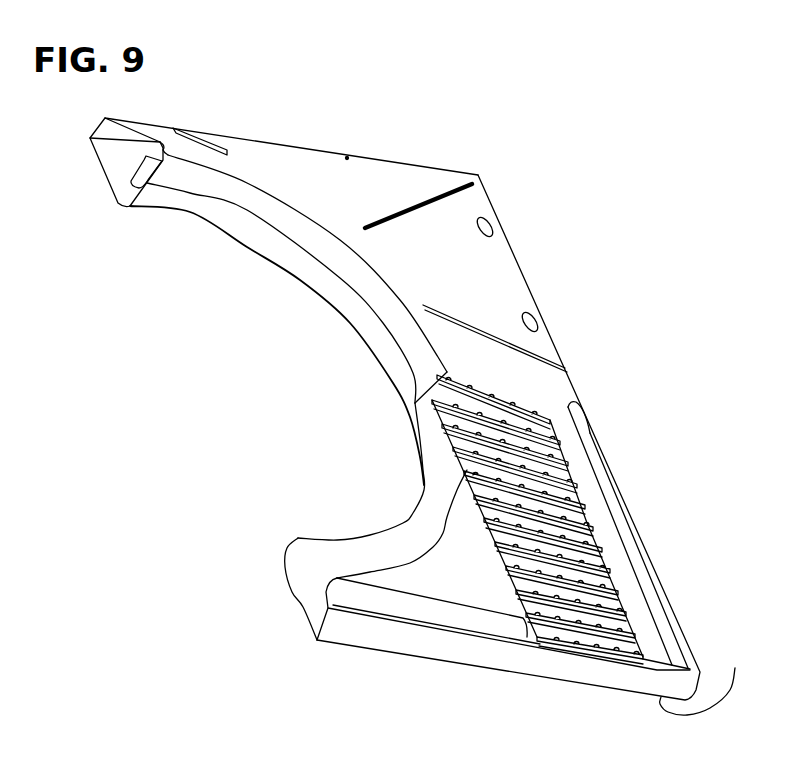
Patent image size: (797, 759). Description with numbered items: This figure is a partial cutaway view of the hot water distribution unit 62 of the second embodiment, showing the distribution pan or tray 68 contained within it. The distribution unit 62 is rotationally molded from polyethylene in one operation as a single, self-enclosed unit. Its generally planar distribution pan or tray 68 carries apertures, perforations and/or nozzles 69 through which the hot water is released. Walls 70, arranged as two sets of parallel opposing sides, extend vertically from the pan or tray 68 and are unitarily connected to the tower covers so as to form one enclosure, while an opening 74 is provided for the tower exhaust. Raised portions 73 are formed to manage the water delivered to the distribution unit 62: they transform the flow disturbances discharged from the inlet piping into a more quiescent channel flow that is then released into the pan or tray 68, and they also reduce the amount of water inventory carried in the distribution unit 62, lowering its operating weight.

The hot water distribution unit 62 is at (527, 247).
The distribution pan or tray 68 is at (617, 587).
The apertures, perforations and/or nozzles 69 is at (588, 510).
The walls 70 is at (408, 163).
The raised portions 73 is at (452, 587).
The opening for tower exhaust 74 is at (326, 394).